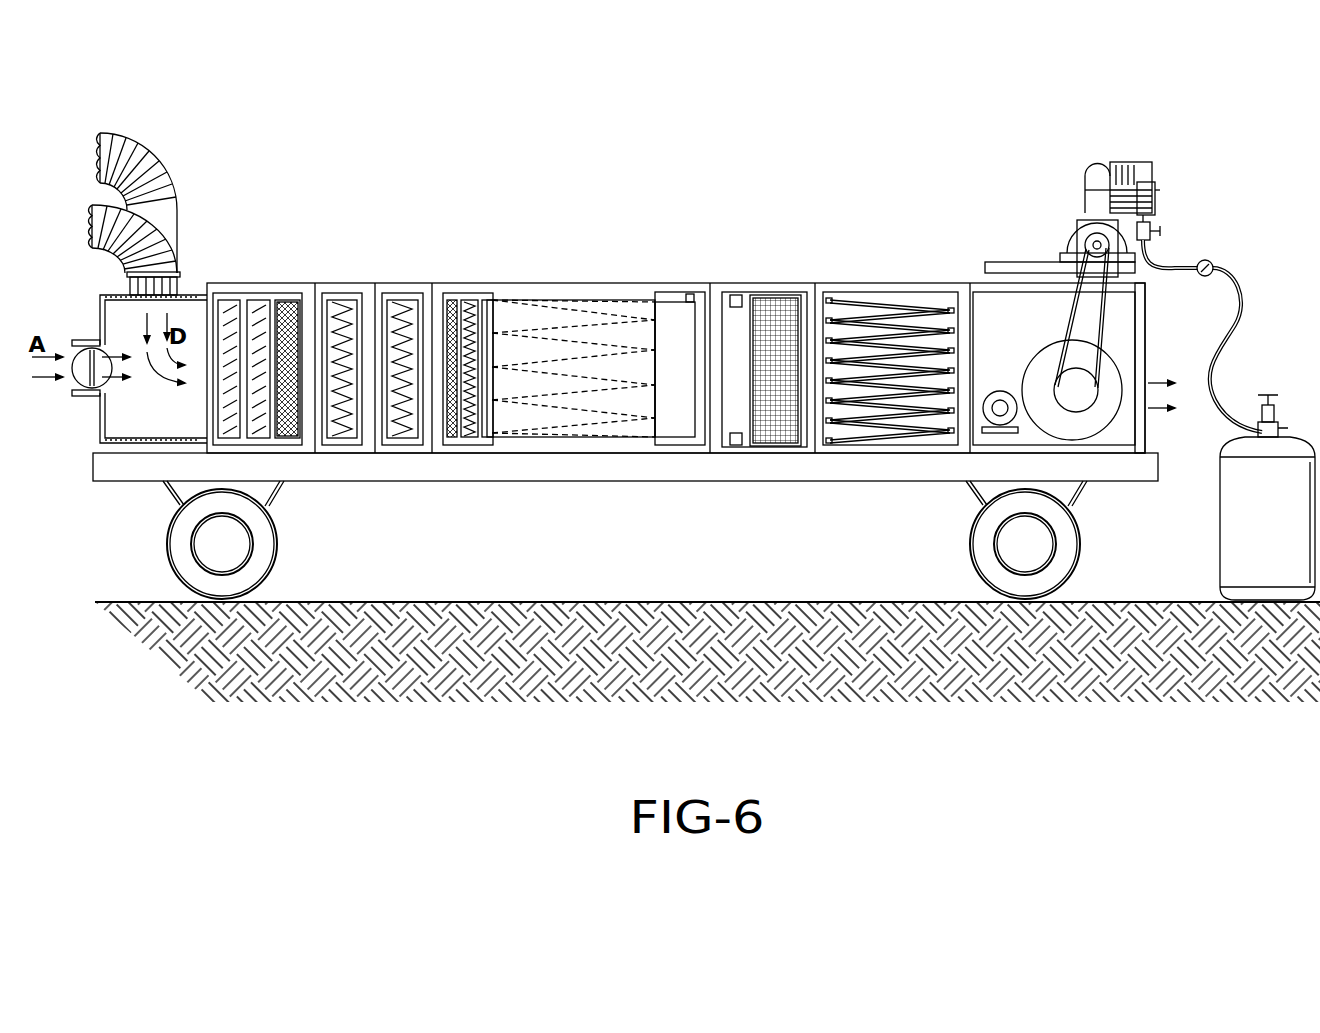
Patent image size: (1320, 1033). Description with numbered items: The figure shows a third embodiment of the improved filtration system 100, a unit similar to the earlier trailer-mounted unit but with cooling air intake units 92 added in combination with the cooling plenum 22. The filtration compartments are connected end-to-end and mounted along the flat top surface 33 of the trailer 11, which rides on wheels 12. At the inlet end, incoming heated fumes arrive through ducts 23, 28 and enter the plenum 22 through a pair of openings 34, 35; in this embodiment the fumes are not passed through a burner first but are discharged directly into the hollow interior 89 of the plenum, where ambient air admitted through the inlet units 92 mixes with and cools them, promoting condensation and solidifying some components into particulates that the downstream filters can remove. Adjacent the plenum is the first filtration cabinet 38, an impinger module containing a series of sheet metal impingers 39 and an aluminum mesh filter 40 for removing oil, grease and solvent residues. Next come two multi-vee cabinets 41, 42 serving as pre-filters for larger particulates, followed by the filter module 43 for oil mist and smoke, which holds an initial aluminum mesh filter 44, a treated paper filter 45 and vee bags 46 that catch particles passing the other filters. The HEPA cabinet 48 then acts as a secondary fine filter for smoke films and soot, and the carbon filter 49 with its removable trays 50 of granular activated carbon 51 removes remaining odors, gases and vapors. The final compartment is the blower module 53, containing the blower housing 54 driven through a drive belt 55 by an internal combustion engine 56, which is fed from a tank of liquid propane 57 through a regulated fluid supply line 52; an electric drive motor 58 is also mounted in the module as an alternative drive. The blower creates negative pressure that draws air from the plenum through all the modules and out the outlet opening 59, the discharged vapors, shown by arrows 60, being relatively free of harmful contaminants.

The trailer 11 is at (720, 478).
The wheels 12 is at (268, 560).
The plenum 22 is at (110, 307).
The lower inlet duct 23 is at (97, 240).
The upper inlet duct 28 is at (140, 152).
The flat top surface 33 is at (633, 455).
The opening 34 is at (143, 300).
The opening 35 is at (163, 300).
The first filtration cabinet 38 is at (237, 290).
The impingers 39 is at (262, 308).
The aluminum mesh filter 40 is at (290, 308).
The multi-vee cabinet 41 is at (345, 452).
The multi-vee cabinet 42 is at (403, 452).
The filter module 43 is at (570, 290).
The aluminum mesh filter 44 is at (453, 298).
The treated paper filter 45 is at (470, 298).
The vee bags 46 is at (668, 300).
The HEPA cabinet 48 is at (760, 292).
The carbon filter 49 is at (890, 363).
The removable trays 50 is at (868, 430).
The granular activated carbon 51 is at (908, 430).
The regulated fluid supply line 52 is at (1238, 285).
The blower module 53 is at (978, 292).
The blower housing 54 is at (1110, 428).
The drive belt 55 is at (1063, 318).
The internal combustion engine 56 is at (1155, 170).
The tank of liquid propane 57 is at (1240, 542).
The electric drive motor 58 is at (1000, 392).
The outlet opening 59 is at (1142, 317).
The arrows 60 is at (1160, 380).
The hollow interior 89 is at (135, 410).
The ambient air inlet units 92 is at (72, 398).
The filtration system 100 is at (603, 270).